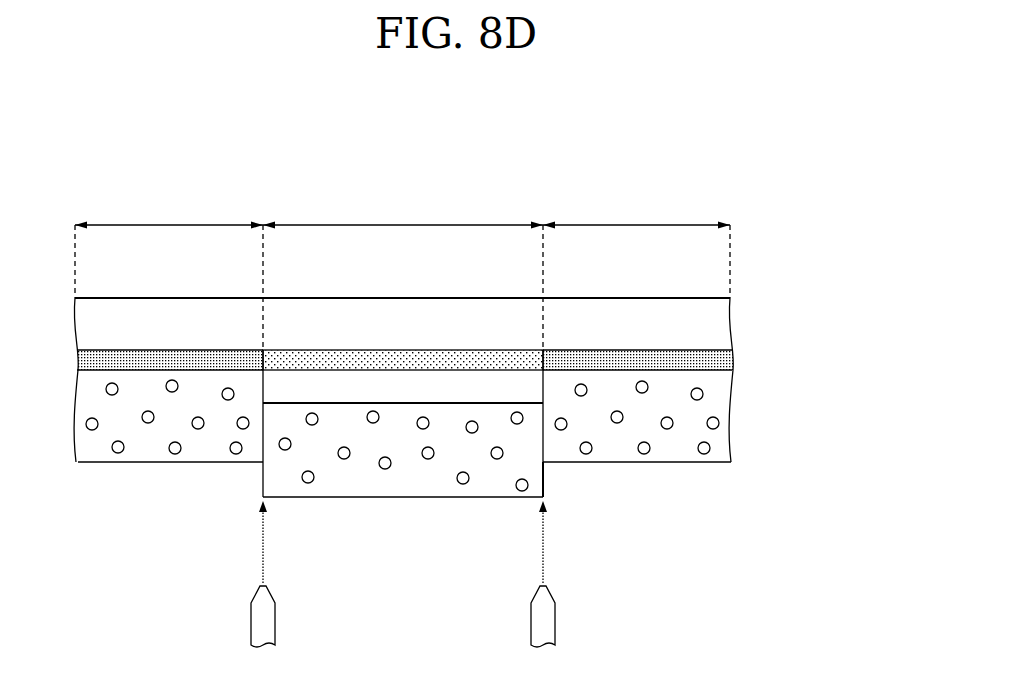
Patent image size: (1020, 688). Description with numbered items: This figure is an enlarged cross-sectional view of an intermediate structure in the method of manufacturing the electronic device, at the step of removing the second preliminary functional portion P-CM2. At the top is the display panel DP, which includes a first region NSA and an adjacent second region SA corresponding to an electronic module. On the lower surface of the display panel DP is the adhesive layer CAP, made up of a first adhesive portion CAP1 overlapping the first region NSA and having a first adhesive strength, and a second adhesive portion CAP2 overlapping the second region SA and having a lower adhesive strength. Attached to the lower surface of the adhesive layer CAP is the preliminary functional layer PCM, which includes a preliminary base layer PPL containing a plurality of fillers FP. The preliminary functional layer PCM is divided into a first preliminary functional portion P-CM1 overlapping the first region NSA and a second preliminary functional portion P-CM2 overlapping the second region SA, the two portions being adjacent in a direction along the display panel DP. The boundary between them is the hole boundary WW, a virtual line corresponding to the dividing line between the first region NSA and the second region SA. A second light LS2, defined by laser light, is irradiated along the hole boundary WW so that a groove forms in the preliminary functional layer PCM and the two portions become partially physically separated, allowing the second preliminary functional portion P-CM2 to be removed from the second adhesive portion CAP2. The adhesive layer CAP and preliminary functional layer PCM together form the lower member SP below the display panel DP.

The first region NSA is at (402, 248).
The second region SA is at (403, 275).
The display panel DP is at (722, 323).
The adhesive layer CAP is at (472, 307).
The first adhesive portion CAP1 is at (165, 358).
The second adhesive portion CAP2 is at (402, 358).
The fillers FP is at (703, 394).
The preliminary base layer PPL is at (720, 443).
The preliminary functional layer PCM is at (484, 456).
The lower member SP is at (503, 402).
The first preliminary functional portion P-CM1 is at (448, 441).
The second preliminary functional portion P-CM2 is at (414, 482).
The hole boundary WW is at (548, 480).
The second light LS2 is at (545, 551).